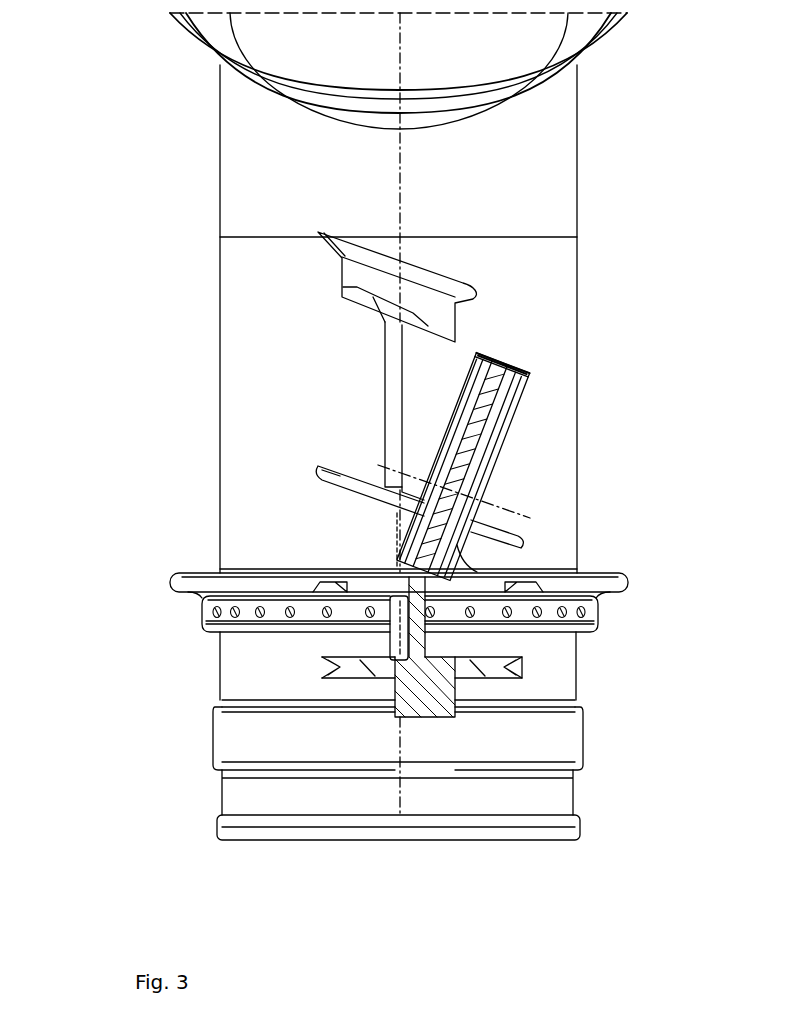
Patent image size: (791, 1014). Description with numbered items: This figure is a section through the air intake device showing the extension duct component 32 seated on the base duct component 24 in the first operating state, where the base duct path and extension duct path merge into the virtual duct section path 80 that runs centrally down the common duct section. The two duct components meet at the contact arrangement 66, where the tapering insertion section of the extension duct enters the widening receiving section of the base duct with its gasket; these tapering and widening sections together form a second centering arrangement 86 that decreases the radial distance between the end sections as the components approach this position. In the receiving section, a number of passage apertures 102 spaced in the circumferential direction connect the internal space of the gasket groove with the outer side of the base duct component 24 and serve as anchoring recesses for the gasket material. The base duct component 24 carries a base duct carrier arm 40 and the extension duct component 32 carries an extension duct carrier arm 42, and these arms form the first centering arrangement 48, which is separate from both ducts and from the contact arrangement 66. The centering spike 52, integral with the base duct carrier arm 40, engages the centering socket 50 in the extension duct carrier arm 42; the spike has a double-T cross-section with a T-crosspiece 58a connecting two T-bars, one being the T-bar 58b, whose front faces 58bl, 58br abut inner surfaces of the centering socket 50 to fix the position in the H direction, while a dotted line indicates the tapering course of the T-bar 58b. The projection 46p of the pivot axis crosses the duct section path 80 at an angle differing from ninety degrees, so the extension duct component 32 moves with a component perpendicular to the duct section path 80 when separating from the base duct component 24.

The base duct component 24 is at (505, 752).
The extension duct component 32 is at (553, 155).
The base duct carrier arm 40 is at (399, 637).
The extension duct carrier arm 42 is at (360, 268).
The projection of the pivot axis 46p is at (530, 522).
The first centering arrangement 48 is at (525, 494).
The centering socket 50 is at (431, 523).
The centering spike 52 is at (434, 452).
The T-crosspiece 58a is at (508, 364).
The T-bar 58b is at (462, 426).
The front face of the T-bar 58bl is at (453, 420).
The front face of the T-bar 58br is at (523, 408).
The contact arrangement 66 is at (160, 583).
The duct section path 80 is at (400, 172).
The second centering arrangement 86 is at (208, 559).
The passage apertures 102 is at (290, 618).